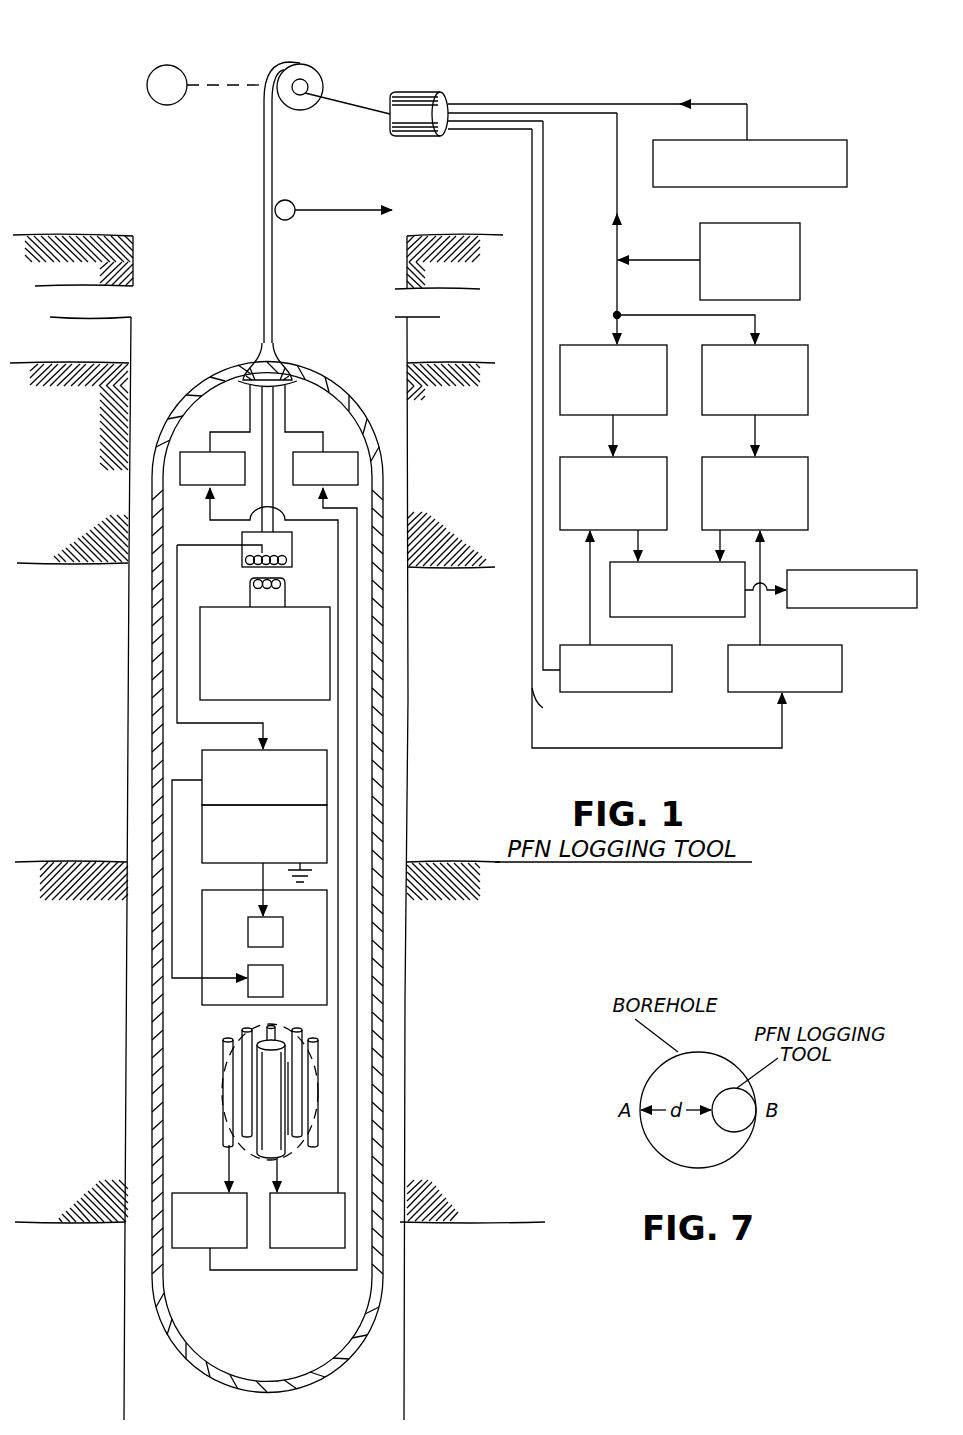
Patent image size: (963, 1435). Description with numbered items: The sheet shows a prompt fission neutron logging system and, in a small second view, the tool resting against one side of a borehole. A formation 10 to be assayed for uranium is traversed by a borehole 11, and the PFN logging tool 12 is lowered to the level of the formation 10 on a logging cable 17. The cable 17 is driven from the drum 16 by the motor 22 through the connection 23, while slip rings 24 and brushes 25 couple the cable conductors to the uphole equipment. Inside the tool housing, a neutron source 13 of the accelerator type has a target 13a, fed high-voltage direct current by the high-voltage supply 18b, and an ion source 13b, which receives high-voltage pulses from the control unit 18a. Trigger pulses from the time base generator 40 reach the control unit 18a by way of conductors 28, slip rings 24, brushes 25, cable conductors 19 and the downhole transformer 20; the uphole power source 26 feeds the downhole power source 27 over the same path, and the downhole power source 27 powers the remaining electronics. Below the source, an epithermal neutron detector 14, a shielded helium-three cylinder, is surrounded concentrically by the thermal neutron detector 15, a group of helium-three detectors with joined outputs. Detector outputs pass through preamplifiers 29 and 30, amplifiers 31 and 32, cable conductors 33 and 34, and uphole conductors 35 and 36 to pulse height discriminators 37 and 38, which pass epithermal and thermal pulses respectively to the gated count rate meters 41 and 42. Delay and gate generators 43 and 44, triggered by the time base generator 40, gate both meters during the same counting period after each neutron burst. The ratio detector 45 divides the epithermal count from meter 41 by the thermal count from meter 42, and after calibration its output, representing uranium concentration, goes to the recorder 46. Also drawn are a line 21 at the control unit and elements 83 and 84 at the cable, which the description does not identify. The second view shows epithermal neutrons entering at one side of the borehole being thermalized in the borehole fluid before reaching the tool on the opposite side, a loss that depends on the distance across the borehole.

The formation 10 is at (75, 1039).
The borehole 11 is at (212, 243).
The PFN logging tool 12 is at (216, 376).
The neutron source 13 is at (327, 982).
The target 13a is at (248, 935).
The ion source 13b is at (248, 965).
The epithermal neutron detector 14 is at (283, 1112).
The thermal neutron detector 15 is at (318, 1082).
The drum 16 is at (322, 74).
The logging cable 17 is at (274, 326).
The control unit 18a is at (202, 770).
The high-voltage supply 18b is at (200, 848).
The cable conductors 19 is at (273, 433).
The downhole transformer 20 is at (330, 587).
The control line 21 is at (268, 725).
The motor 22 is at (146, 80).
The connection 23 is at (218, 92).
The slip rings 24 is at (308, 87).
The brushes 25 is at (334, 116).
The uphole power source 26 is at (782, 140).
The downhole power source 27 is at (232, 605).
The conductors 28 is at (488, 112).
The preamplifier 29 is at (317, 1249).
The preamplifier 30 is at (200, 1249).
The amplifier 31 is at (198, 487).
The amplifier 32 is at (358, 468).
The cable conductor 33 is at (238, 430).
The cable conductor 34 is at (313, 428).
The uphole conductor 35 is at (543, 207).
The uphole conductor 36 is at (532, 186).
The pulse height discriminator 37 is at (638, 692).
The pulse height discriminator 38 is at (757, 692).
The time base generator 40 is at (800, 250).
The gated count rate meter 41 is at (653, 455).
The gated count rate meter 42 is at (808, 477).
The delay and gate generator 43 is at (598, 345).
The delay and gate generator 44 is at (803, 345).
The ratio detector 45 is at (680, 617).
The recorder 46 is at (873, 570).
The measuring wheel 83 is at (296, 201).
The depth signal 84 is at (357, 203).